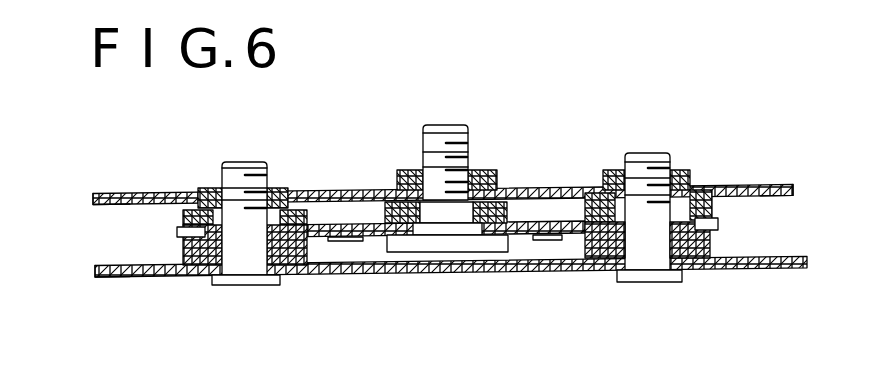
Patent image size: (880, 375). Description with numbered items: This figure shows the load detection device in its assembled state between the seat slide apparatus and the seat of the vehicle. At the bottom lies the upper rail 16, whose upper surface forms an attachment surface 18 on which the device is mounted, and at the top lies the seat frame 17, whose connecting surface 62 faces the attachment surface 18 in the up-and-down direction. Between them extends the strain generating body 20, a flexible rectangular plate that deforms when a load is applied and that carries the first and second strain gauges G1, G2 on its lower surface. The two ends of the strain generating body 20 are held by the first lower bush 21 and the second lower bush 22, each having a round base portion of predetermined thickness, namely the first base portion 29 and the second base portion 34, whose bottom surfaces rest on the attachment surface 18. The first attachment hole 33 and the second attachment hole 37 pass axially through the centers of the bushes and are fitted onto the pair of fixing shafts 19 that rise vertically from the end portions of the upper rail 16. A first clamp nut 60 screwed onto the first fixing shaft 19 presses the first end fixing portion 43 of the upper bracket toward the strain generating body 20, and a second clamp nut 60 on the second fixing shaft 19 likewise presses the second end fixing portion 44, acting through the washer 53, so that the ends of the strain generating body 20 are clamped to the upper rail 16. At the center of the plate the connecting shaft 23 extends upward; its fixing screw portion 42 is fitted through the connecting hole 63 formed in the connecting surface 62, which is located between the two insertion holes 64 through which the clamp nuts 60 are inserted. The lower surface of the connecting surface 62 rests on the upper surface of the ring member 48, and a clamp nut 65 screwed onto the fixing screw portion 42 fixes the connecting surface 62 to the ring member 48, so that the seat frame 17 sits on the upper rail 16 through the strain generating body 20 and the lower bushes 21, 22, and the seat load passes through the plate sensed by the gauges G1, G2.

The upper rail 16 is at (120, 278).
The seat frame 17 is at (796, 185).
The attachment surface 18 is at (767, 257).
The fixing shaft 19 is at (240, 172).
The strain generating body 20 is at (560, 220).
The first lower bush 21 is at (198, 266).
The second lower bush 22 is at (607, 259).
The connecting shaft 23 is at (438, 252).
The first base portion 29 is at (287, 253).
The first attachment hole 33 is at (237, 252).
The second base portion 34 is at (697, 247).
The second attachment hole 37 is at (637, 240).
The fixing screw portion 42 is at (442, 142).
The first end fixing portion 43 is at (183, 219).
The second end fixing portion 44 is at (767, 183).
The ring member 48 is at (388, 208).
The washer 53 is at (699, 190).
The clamp nut 60 is at (212, 192).
The connecting surface 62 is at (125, 205).
The connecting hole 63 is at (438, 190).
The insertion hole 64 is at (310, 200).
The clamp nut 65 is at (485, 170).
The first strain gauge G1 is at (353, 241).
The second strain gauge G2 is at (560, 241).